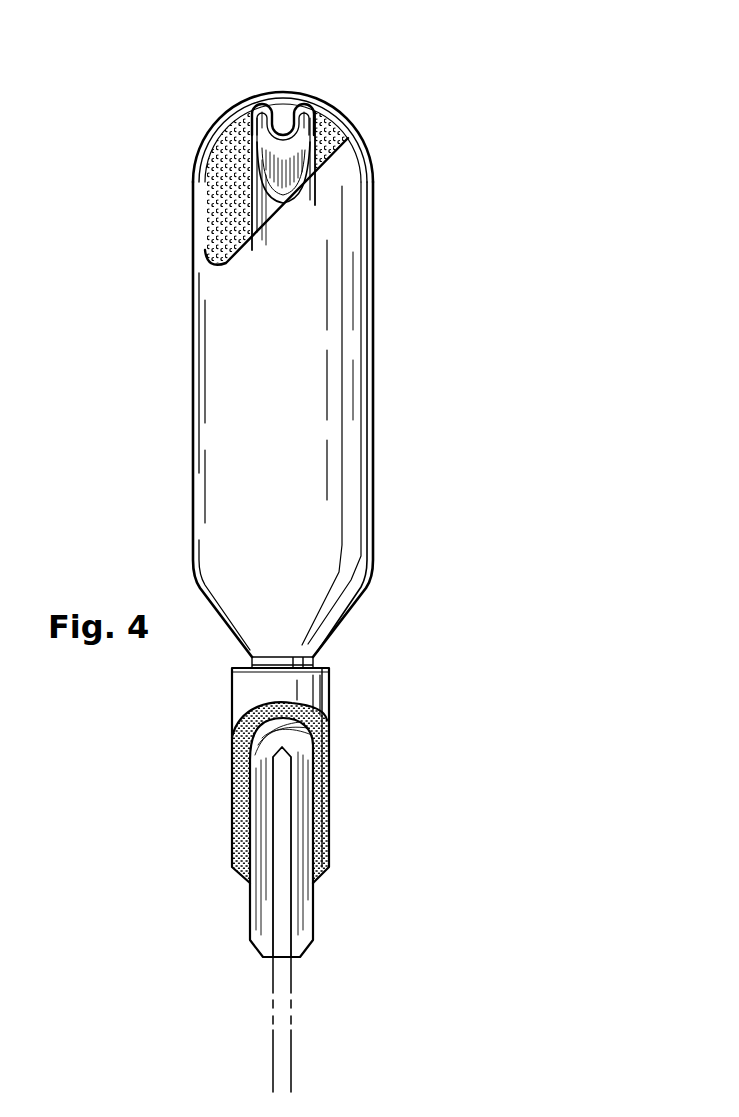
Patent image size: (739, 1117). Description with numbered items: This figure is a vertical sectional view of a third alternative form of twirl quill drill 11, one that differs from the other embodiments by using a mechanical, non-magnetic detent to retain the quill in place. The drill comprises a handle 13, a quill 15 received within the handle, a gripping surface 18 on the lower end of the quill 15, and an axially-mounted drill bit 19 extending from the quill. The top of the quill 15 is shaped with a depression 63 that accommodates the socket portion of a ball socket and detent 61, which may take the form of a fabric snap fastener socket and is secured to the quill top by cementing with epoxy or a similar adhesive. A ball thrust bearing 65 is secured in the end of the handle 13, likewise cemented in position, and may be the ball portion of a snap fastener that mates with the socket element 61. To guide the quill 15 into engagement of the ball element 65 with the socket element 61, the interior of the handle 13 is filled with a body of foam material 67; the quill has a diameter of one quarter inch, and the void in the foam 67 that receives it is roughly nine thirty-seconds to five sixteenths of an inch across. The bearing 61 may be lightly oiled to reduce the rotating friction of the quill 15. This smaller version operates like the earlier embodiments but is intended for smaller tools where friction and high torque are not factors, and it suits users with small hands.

The twirl quill drill 11 is at (373, 293).
The handle 13 is at (375, 402).
The quill 15 is at (313, 898).
The gripping surface 18 is at (330, 688).
The drill bit 19 is at (291, 983).
The ball socket and detent 61 is at (313, 117).
The depression 63 is at (290, 147).
The ball thrust bearing 65 is at (273, 105).
The body of foam material 67 is at (208, 223).